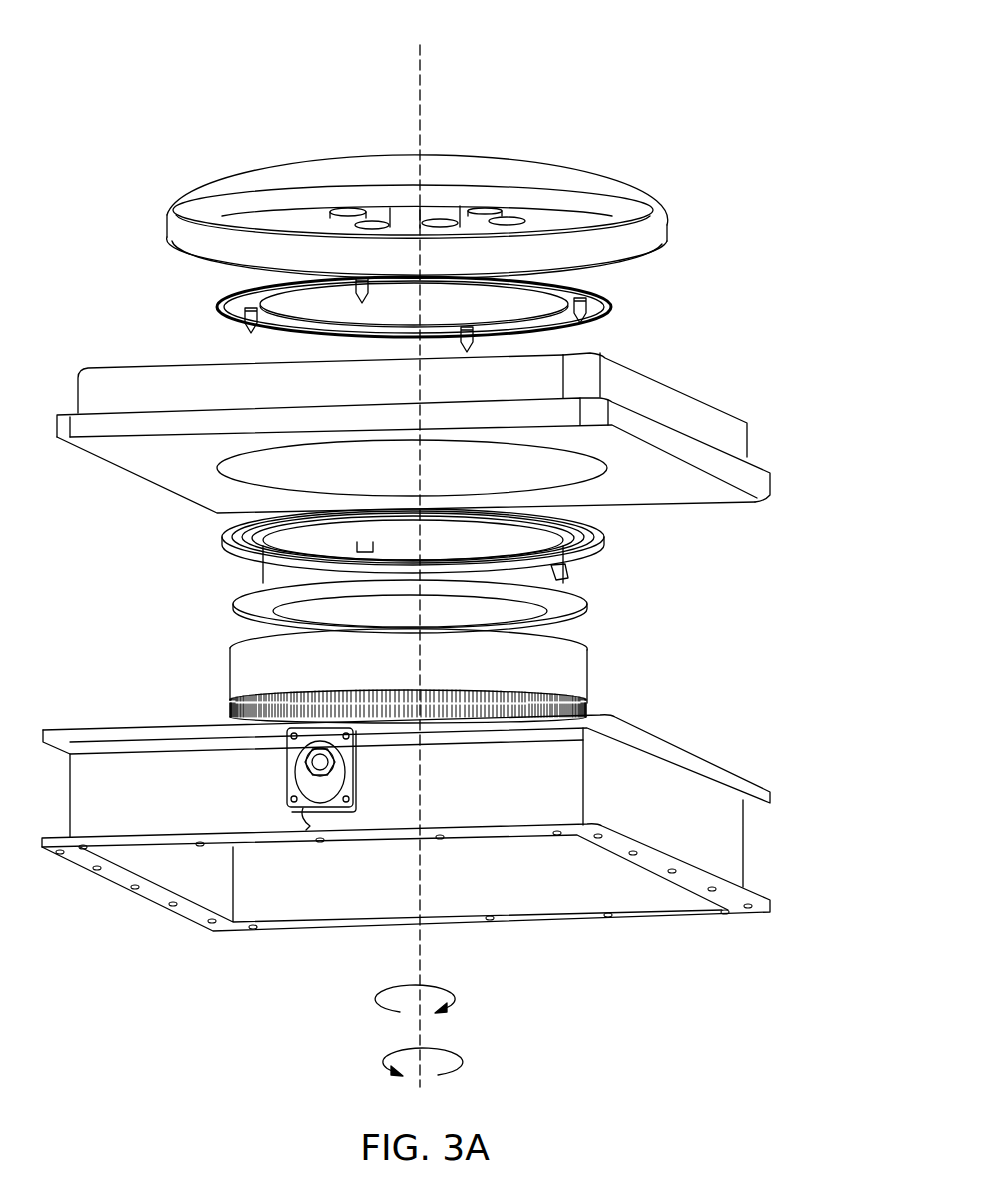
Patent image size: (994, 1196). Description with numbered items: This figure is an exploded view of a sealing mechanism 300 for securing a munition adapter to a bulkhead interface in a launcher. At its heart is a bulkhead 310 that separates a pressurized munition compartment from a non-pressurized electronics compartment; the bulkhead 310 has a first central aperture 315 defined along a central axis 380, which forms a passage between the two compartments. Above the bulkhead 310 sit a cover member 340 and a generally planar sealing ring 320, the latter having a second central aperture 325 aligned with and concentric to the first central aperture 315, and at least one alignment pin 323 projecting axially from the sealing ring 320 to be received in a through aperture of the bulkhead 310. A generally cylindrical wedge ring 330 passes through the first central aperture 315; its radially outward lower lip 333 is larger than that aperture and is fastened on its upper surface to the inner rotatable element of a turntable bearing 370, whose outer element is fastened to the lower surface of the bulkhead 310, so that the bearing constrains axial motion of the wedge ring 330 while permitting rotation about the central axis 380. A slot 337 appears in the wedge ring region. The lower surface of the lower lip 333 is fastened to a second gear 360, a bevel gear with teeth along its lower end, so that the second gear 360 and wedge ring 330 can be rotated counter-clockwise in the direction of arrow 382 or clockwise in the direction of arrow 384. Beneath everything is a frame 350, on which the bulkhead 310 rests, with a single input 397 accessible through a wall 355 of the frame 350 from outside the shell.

The sealing mechanism 300 is at (620, 122).
The bulkhead 310 is at (690, 420).
The first central aperture 315 is at (233, 460).
The sealing ring 320 is at (613, 298).
The alignment pin 323 is at (590, 322).
The second central aperture 325 is at (330, 297).
The wedge ring 330 is at (572, 580).
The lower lip 333 is at (587, 607).
The slot 337 is at (367, 550).
The cover member 340 is at (627, 197).
The frame 350 is at (700, 827).
The wall 355 is at (163, 798).
The second gear 360 is at (570, 671).
The turntable bearing 370 is at (603, 532).
The central axis 380 is at (423, 97).
The arrow 382 is at (395, 999).
The arrow 384 is at (399, 1062).
The input 397 is at (308, 807).